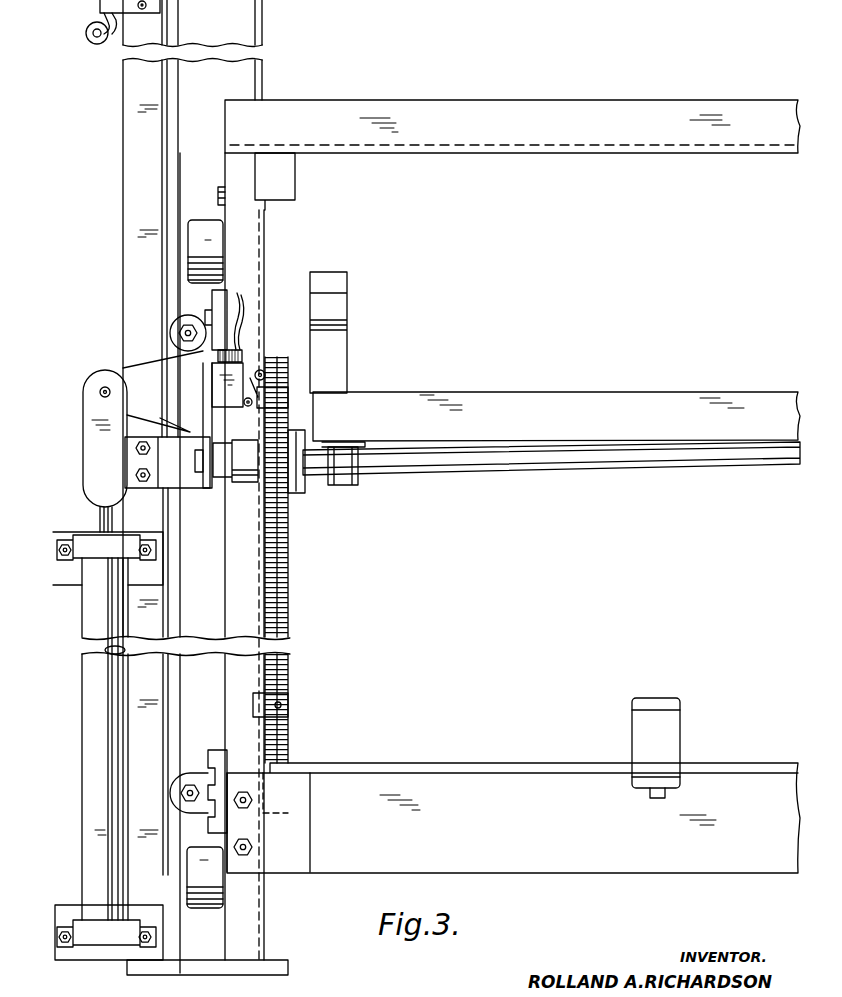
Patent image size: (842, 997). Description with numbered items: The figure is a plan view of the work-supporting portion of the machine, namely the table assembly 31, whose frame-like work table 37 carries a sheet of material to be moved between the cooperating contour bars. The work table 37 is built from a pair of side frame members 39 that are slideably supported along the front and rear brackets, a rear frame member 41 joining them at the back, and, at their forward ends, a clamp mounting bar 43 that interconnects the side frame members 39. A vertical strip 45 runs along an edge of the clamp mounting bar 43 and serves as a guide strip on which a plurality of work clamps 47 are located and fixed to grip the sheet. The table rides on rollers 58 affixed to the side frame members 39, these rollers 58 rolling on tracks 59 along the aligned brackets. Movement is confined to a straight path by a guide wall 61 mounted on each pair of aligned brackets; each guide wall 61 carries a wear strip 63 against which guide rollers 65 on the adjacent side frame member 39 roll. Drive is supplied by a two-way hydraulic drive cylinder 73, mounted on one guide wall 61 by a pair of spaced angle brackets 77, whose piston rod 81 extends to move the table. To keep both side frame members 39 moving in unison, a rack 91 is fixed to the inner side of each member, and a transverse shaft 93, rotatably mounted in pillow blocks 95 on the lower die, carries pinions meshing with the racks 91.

The table assembly 31 is at (486, 746).
The work table 37 is at (327, 787).
The side frame members 39 is at (238, 587).
The rear frame member 41 is at (482, 102).
The clamp mounting bar 43 is at (503, 857).
The vertical strip 45 is at (555, 767).
The work clamps 47 is at (662, 754).
The rollers 58 is at (205, 232).
The tracks 59 is at (213, 950).
The guide wall 61 is at (140, 835).
The wear strip 63 is at (172, 728).
The guide rollers 65 is at (180, 316).
The two-way hydraulic drive cylinder 73 is at (97, 765).
The angle brackets 77 is at (58, 588).
The piston rod 81 is at (100, 513).
The rack 91 is at (285, 572).
The shaft 93 is at (577, 455).
The pillow blocks 95 is at (352, 482).